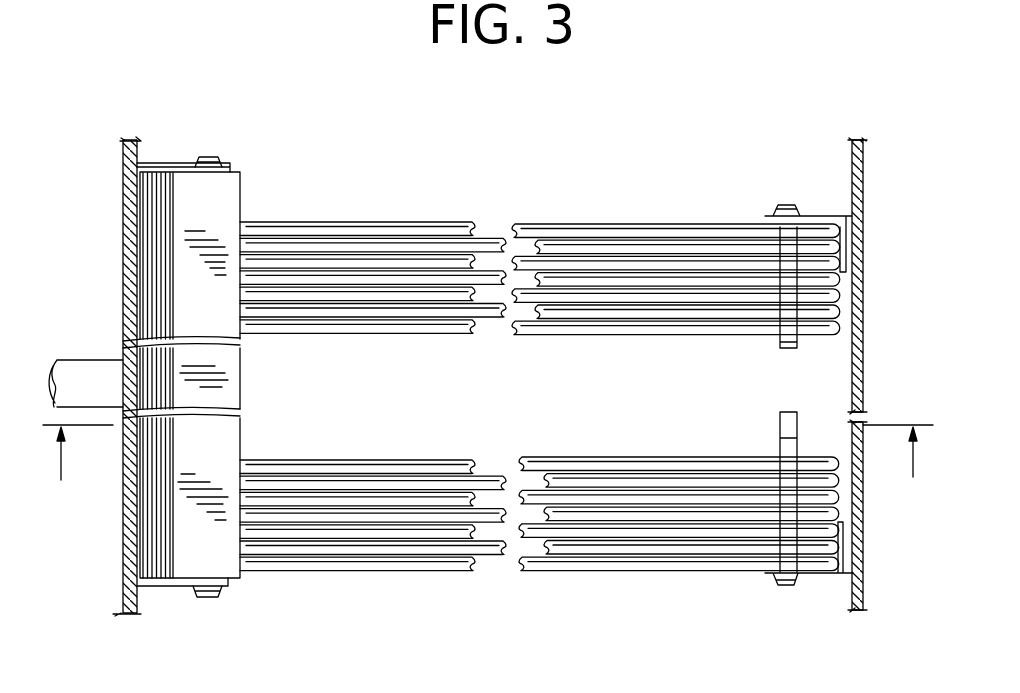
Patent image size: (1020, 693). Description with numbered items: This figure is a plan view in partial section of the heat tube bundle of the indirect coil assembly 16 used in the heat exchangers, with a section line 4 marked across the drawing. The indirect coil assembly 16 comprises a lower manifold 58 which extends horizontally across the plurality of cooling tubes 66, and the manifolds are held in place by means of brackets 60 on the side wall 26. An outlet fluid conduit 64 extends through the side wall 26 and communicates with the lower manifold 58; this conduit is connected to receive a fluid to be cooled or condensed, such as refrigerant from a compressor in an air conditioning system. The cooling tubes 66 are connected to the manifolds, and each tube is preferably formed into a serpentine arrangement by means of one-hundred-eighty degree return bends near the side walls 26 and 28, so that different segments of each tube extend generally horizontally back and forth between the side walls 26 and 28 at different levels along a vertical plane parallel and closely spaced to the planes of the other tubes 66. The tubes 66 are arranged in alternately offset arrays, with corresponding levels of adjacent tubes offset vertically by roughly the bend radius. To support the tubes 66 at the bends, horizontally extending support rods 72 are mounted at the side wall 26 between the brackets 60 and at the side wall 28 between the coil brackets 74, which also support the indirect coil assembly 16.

The indirect coil assembly 16 is at (596, 205).
The side wall 26 is at (122, 268).
The side wall 28 is at (860, 252).
The lower manifold 58 is at (233, 187).
The brackets 60 is at (175, 172).
The outlet fluid conduit 64 is at (92, 365).
The cooling tubes 66 is at (395, 258).
The support rods 72 is at (780, 344).
The coil brackets 74 is at (829, 223).
The section line 4- 4 is at (488, 464).